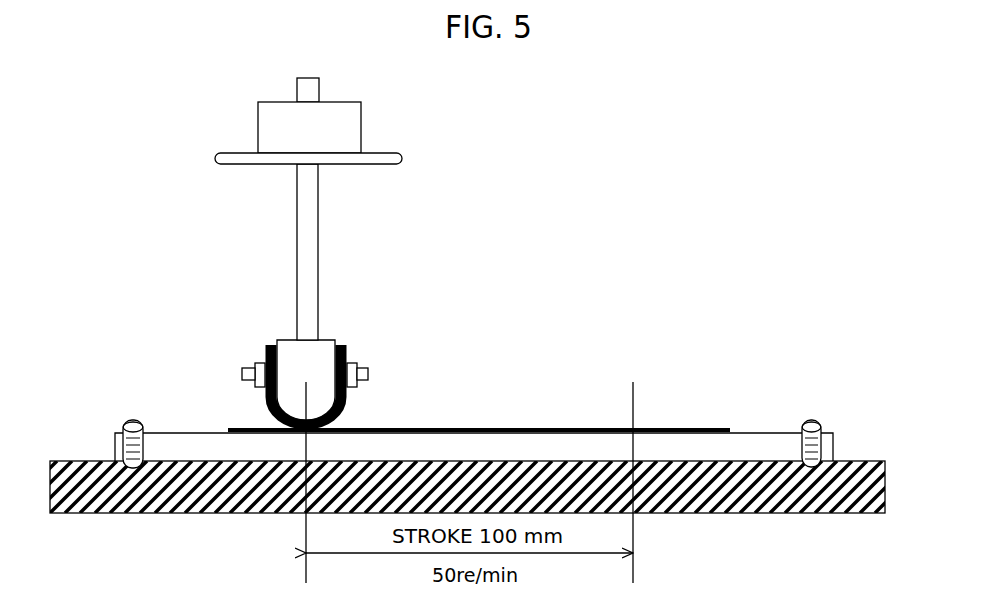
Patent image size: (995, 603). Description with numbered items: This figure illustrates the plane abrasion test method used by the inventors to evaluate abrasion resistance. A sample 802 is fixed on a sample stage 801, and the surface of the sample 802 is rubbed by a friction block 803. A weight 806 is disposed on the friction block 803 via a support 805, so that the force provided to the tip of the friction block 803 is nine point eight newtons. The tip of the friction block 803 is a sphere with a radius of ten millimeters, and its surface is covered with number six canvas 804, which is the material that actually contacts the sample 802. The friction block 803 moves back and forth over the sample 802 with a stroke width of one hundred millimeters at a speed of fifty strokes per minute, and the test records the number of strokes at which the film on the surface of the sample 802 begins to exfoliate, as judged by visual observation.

The sample stage 801 is at (858, 461).
The sample 802 is at (775, 433).
The friction block 803 is at (322, 345).
The canvas (number 6) 804 is at (342, 347).
The support 805 is at (318, 220).
The weight 806 is at (354, 102).